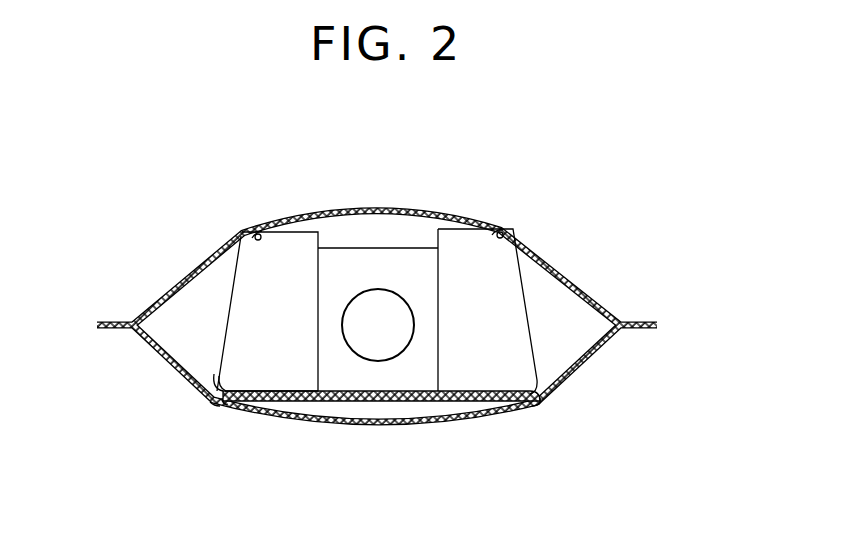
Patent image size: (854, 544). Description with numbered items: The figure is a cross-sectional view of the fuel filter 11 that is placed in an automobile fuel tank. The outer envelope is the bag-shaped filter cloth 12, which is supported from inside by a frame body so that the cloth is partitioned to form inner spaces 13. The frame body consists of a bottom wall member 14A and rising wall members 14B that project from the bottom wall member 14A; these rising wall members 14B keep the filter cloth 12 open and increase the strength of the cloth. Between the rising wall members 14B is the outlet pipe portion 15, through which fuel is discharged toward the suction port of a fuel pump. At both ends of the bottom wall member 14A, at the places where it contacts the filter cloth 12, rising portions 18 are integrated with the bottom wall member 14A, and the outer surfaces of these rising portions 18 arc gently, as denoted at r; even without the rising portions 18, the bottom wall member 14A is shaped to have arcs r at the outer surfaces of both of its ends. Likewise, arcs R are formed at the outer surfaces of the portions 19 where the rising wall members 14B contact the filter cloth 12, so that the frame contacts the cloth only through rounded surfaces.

The fuel filter 11 is at (575, 266).
The filter cloth 12 is at (395, 211).
The inner spaces 13 is at (348, 397).
The bottom wall member 14A is at (412, 401).
The rising wall members 14B is at (513, 323).
The outlet pipe portion 15 is at (367, 288).
The rising portions 18 is at (213, 402).
The portions where the rising wall members contact the filter cloth 19 is at (243, 232).
The arcs R is at (262, 226).
The arcs r is at (233, 403).